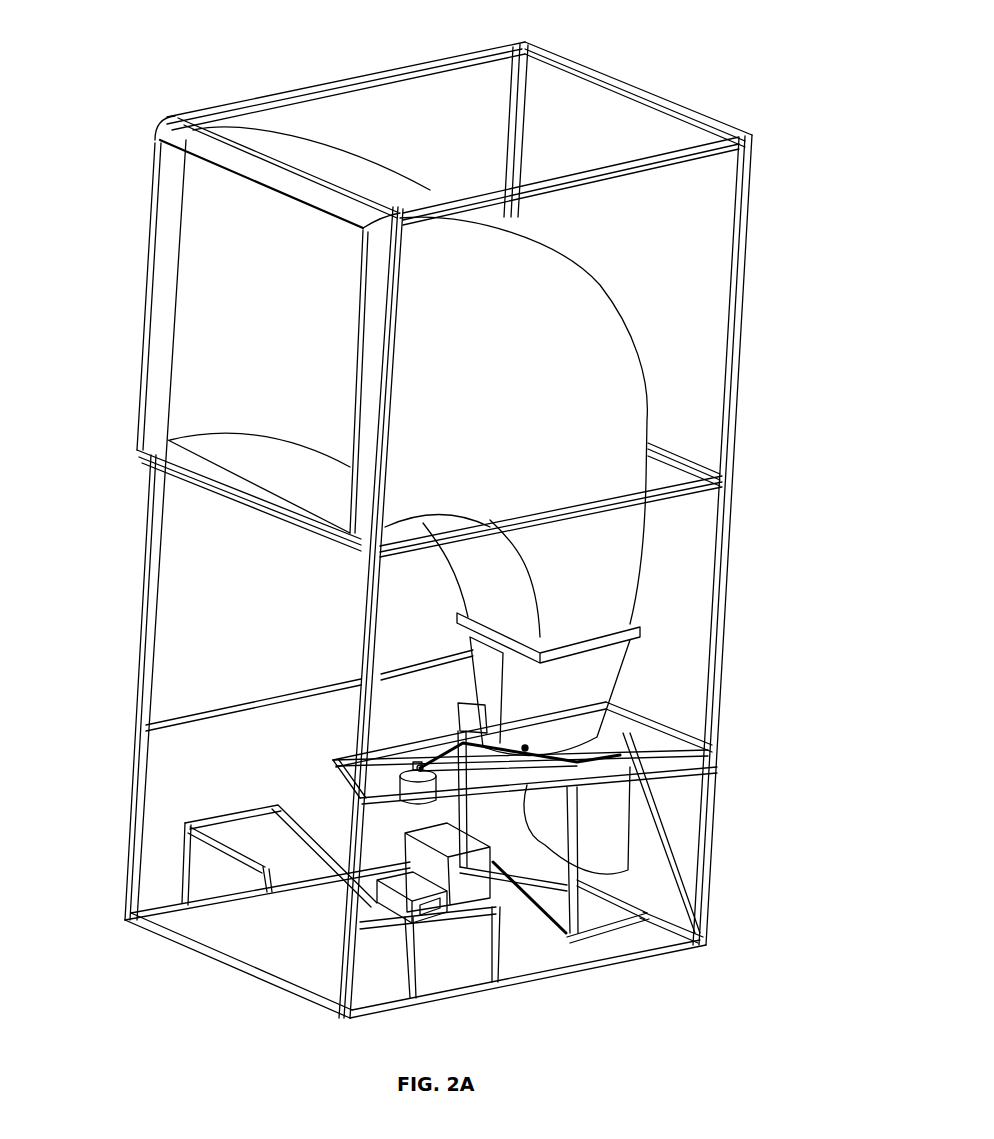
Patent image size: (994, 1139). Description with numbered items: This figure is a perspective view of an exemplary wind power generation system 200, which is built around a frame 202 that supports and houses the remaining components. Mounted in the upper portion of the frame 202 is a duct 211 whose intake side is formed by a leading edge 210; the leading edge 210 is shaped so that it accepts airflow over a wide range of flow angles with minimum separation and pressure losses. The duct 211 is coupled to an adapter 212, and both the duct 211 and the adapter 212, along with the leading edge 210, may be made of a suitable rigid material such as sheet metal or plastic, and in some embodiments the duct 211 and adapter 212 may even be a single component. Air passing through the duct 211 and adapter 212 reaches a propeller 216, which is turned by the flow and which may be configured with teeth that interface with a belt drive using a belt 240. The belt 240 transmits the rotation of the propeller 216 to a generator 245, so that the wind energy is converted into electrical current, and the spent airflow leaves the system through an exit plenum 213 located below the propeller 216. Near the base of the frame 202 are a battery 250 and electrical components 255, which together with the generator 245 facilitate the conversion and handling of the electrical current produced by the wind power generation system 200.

The wind power generation system 200 is at (278, 68).
The frame 202 is at (585, 68).
The leading edge 210 is at (168, 202).
The duct 211 is at (550, 325).
The adapter 212 is at (588, 700).
The exit plenum 213 is at (600, 832).
The propeller 216 is at (637, 768).
The belt 240 is at (463, 745).
The generator 245 is at (413, 772).
The battery 250 is at (465, 887).
The electrical components 255 is at (392, 900).